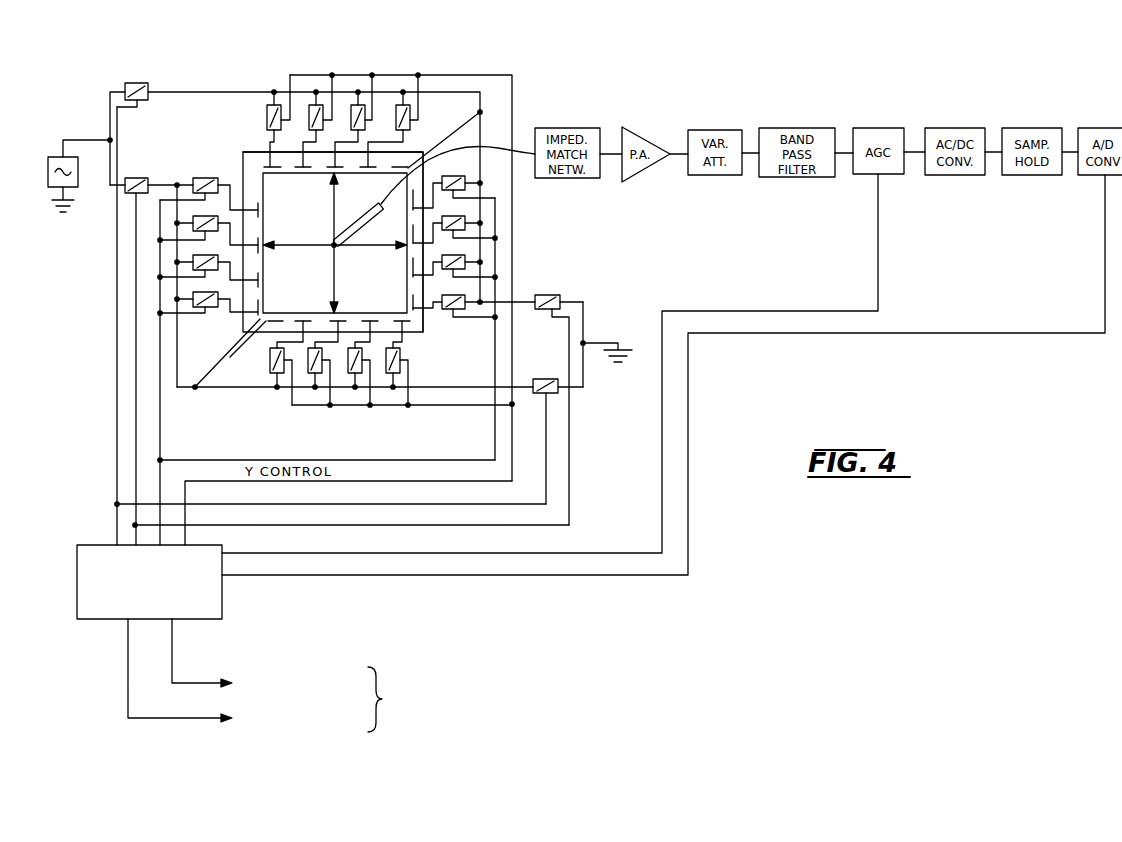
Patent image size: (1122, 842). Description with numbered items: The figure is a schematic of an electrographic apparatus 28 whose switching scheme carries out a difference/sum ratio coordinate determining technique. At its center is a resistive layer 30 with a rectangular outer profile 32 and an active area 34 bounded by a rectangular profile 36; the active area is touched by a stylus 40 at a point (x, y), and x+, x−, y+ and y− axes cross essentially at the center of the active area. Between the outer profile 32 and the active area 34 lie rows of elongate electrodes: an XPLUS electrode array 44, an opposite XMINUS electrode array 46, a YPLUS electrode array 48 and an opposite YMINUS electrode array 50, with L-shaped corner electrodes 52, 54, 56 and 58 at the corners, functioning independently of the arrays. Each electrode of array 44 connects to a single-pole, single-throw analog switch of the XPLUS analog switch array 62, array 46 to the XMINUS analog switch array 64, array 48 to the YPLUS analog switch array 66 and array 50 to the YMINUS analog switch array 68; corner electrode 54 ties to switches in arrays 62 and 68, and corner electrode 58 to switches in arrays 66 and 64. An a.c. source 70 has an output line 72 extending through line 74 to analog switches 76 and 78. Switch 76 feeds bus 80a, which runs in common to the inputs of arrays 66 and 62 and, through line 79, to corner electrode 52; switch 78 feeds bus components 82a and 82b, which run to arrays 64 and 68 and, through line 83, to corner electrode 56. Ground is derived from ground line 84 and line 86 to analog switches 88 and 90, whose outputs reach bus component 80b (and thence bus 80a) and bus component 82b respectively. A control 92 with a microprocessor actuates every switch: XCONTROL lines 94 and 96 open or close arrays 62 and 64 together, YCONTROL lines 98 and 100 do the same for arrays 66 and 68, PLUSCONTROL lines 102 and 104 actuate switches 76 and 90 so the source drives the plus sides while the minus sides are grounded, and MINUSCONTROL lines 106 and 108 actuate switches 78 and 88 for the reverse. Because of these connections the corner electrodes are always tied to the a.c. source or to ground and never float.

The electrographic apparatus 28 is at (567, 68).
The resistive layer 30 is at (258, 160).
The outer profile 32 is at (243, 153).
The active area 34 is at (258, 198).
The rectangular profile 36 is at (258, 233).
The stylus 40 is at (372, 212).
The XPLUS electrode array 44 is at (428, 325).
The XMINUS electrode array 46 is at (248, 303).
The YPLUS electrode array 48 is at (400, 160).
The YMINUS electrode array 50 is at (282, 332).
The corner electrode 52 is at (426, 160).
The corner electrode 54 is at (424, 322).
The corner electrode 56 is at (247, 338).
The corner electrode 58 is at (243, 166).
The XPLUS analog switch array 62 is at (474, 178).
The XMINUS analog switch array 64 is at (196, 168).
The YPLUS analog switch array 66 is at (255, 108).
The YMINUS analog switch array 68 is at (253, 377).
The a.c. source 70 is at (48, 167).
The output line 72 is at (82, 140).
The line 74 is at (110, 100).
The analog switch 76 is at (137, 83).
The analog switch 78 is at (136, 178).
The line 79 is at (466, 118).
The bus 80a is at (258, 92).
The bus component 80b is at (527, 300).
The bus component 82a is at (177, 180).
The bus component 82b is at (181, 389).
The line 83 is at (224, 349).
The ground line 84 is at (606, 348).
The line 86 is at (586, 320).
The analog switch 88 is at (560, 296).
The analog switch 90 is at (548, 378).
The control 92 is at (222, 601).
The XCONTROL line 94 is at (160, 440).
The XCONTROL line 96 is at (428, 460).
The YCONTROL line 98 is at (436, 483).
The YCONTROL line 100 is at (470, 407).
The PLUSCONTROL line 102 is at (117, 472).
The PLUSCONTROL line 104 is at (446, 506).
The MINUSCONTROL line 106 is at (135, 408).
The MINUSCONTROL line 108 is at (478, 527).